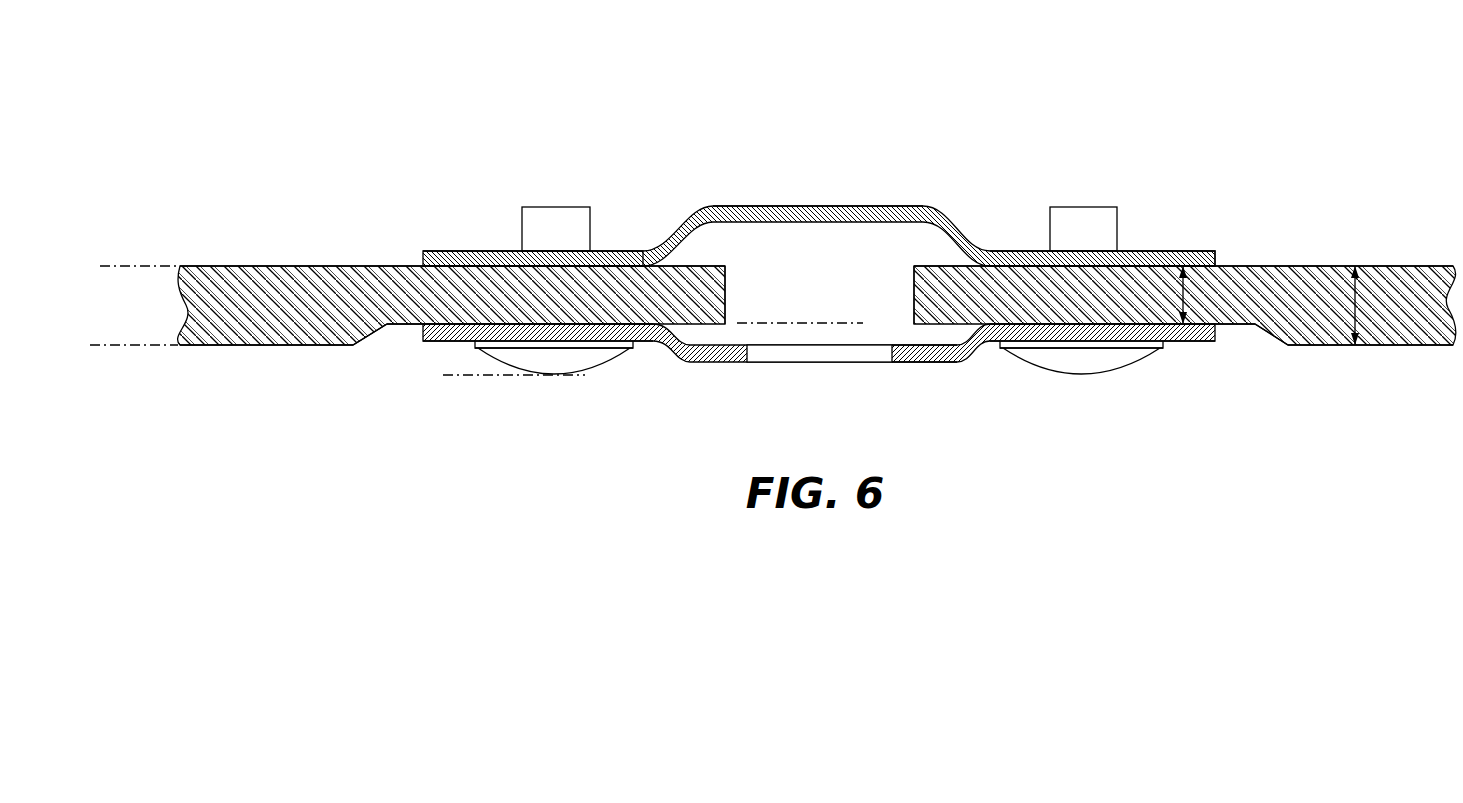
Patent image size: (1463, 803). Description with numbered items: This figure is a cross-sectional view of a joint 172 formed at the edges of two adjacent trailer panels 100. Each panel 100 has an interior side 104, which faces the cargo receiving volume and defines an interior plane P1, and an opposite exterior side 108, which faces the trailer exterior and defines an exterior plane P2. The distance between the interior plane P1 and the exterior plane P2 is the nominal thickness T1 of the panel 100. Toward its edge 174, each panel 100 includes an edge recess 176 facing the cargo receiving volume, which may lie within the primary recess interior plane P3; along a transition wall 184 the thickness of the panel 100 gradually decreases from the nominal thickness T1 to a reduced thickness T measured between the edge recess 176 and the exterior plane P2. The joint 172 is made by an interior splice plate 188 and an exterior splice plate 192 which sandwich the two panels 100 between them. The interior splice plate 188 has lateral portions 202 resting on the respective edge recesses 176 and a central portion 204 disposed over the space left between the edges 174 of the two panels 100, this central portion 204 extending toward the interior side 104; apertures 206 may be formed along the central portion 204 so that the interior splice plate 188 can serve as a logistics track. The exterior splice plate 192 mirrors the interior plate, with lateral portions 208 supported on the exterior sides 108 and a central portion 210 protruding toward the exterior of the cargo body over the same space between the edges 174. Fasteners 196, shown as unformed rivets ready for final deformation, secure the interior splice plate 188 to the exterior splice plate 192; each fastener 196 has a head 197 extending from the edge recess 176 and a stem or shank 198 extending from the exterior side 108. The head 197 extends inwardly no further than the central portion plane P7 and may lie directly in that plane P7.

The panel 100 is at (250, 290).
The interior side 104 is at (282, 348).
The exterior side 108 is at (314, 264).
The joint 172 is at (812, 271).
The edge 174 is at (733, 296).
The edge recess 176 is at (405, 331).
The transition wall 184 is at (363, 341).
The interior splice plate 188 is at (677, 376).
The exterior splice plate 192 is at (949, 206).
The fastener 196 is at (560, 378).
The head 197 is at (585, 357).
The stem or shank 198 is at (566, 215).
The lateral portion 202 is at (653, 347).
The central portion 204 is at (930, 357).
The aperture 206 is at (820, 363).
The lateral portion 208 is at (622, 250).
The central portion 210 is at (826, 201).
The interior plane P1 is at (152, 344).
The exterior plane P2 is at (152, 263).
The primary recess interior plane P3 is at (790, 321).
The central portion plane P7 is at (468, 377).
The thickness T is at (1190, 296).
The nominal thickness T1 is at (1378, 298).